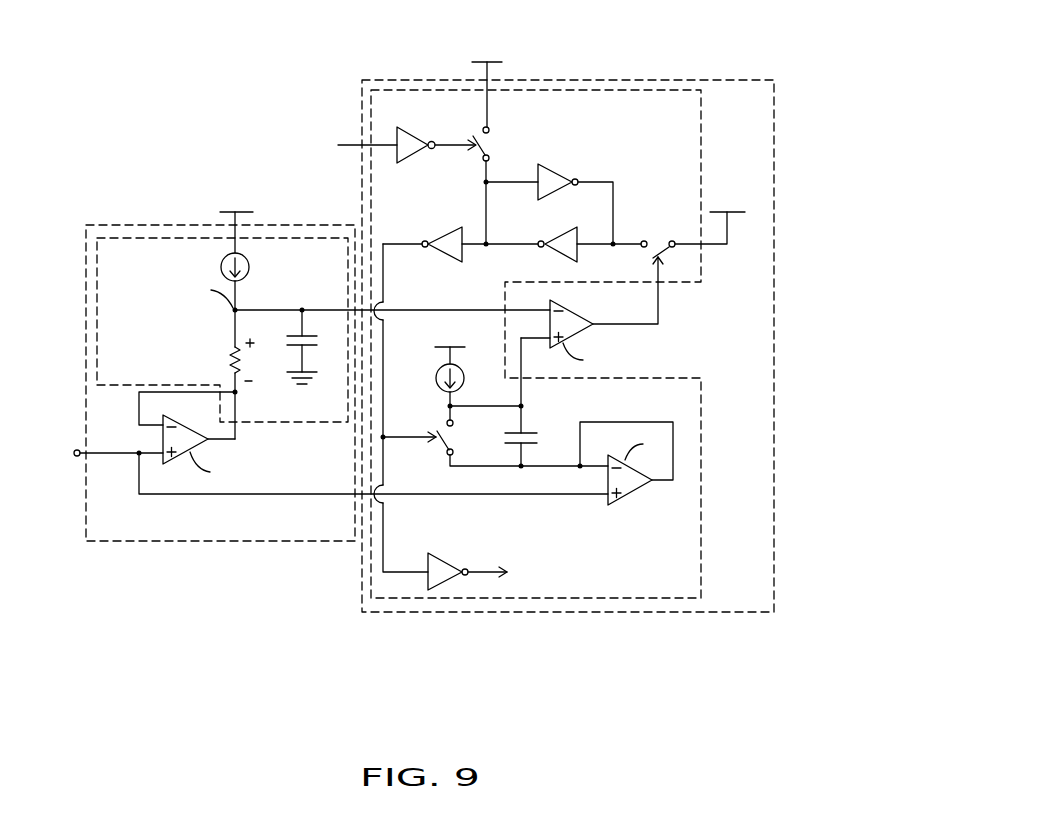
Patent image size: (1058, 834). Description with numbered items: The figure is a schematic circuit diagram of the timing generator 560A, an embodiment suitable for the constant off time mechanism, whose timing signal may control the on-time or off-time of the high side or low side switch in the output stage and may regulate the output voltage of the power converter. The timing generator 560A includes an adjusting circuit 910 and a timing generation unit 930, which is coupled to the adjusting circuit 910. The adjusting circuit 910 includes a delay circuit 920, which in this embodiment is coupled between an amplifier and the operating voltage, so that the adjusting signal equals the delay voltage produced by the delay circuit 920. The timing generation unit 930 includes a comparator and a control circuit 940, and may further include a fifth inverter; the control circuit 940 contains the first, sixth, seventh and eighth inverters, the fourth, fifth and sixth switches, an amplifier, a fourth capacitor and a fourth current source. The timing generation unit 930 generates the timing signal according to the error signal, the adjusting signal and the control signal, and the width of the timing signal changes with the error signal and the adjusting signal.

The adjusting circuit 910 is at (132, 224).
The delay circuit 920 is at (178, 238).
The timing generation unit 930 is at (727, 79).
The control circuit 940 is at (642, 88).
The timing generator 560A is at (757, 684).